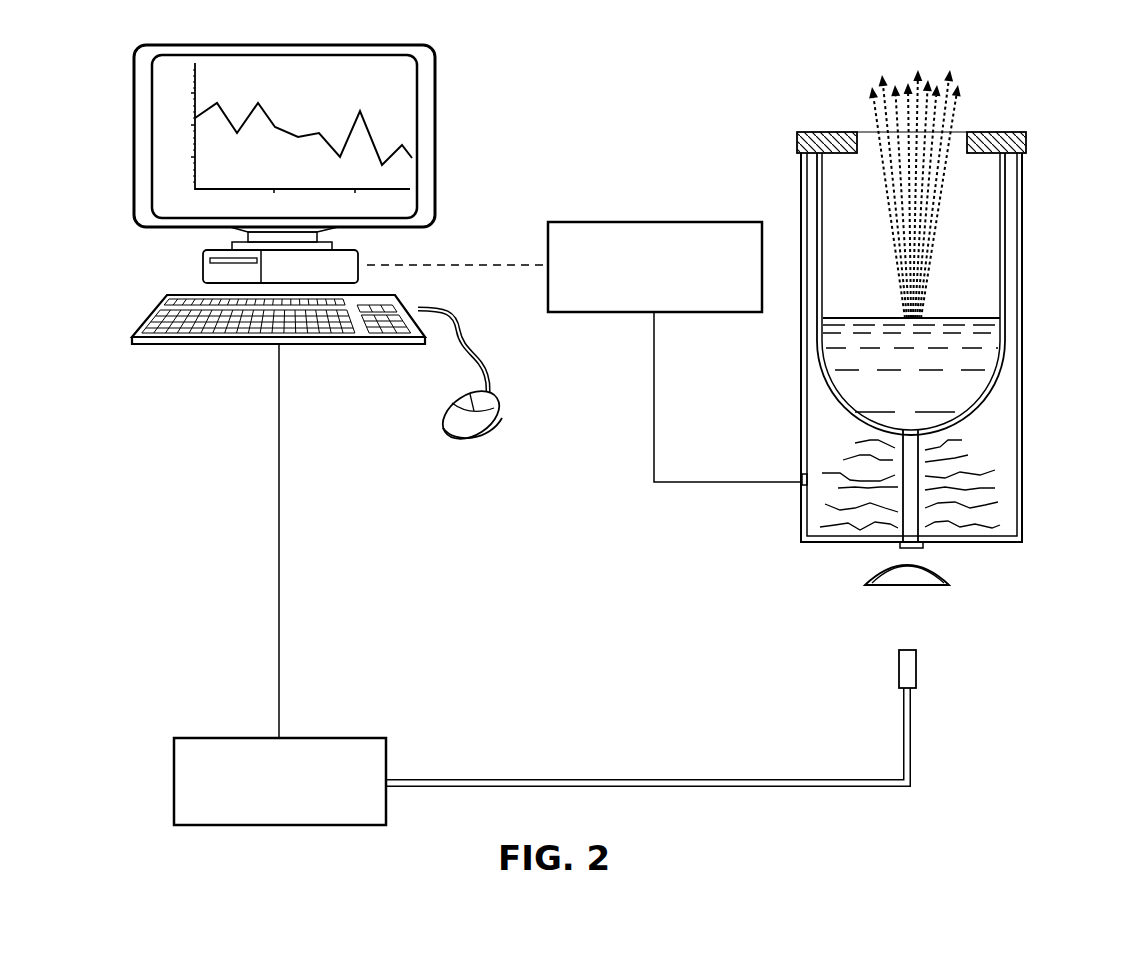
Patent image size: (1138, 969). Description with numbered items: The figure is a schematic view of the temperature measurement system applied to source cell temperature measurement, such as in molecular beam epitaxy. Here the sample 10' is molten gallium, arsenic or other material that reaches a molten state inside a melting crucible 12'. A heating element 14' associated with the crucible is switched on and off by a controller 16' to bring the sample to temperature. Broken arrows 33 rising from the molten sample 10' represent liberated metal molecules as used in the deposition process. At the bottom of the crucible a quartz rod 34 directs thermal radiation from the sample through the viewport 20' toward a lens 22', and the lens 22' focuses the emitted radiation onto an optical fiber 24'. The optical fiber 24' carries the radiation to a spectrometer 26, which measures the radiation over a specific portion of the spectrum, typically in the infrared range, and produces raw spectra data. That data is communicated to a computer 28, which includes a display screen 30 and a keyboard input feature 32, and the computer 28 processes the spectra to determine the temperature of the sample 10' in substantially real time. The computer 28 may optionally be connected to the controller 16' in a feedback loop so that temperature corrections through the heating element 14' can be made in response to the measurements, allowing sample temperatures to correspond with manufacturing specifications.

The sample 10' is at (911, 329).
The melting crucible 12' is at (939, 337).
The heating element 14' is at (941, 467).
The controller 16' is at (674, 319).
The viewport 20' is at (865, 566).
The lens 22' is at (950, 579).
The optical fiber 24' is at (692, 716).
The spectrometer 26 is at (174, 785).
The computer processing device 28 is at (203, 258).
The display screen 30 is at (293, 77).
The keyboard input feature 32 is at (132, 335).
The broken arrows 33 is at (957, 110).
The quartz rod 34 is at (912, 500).